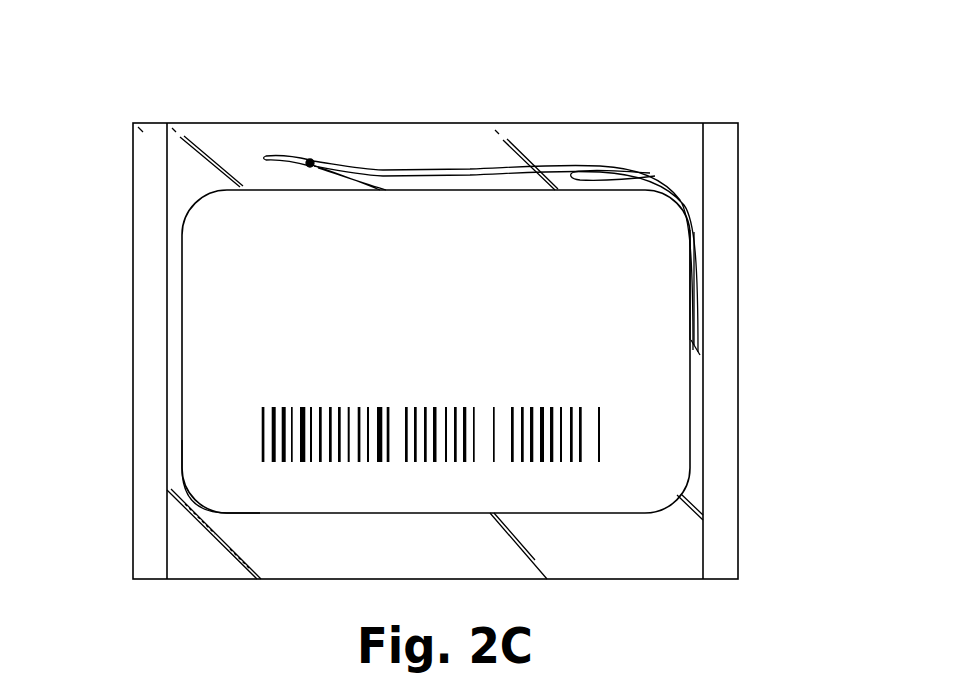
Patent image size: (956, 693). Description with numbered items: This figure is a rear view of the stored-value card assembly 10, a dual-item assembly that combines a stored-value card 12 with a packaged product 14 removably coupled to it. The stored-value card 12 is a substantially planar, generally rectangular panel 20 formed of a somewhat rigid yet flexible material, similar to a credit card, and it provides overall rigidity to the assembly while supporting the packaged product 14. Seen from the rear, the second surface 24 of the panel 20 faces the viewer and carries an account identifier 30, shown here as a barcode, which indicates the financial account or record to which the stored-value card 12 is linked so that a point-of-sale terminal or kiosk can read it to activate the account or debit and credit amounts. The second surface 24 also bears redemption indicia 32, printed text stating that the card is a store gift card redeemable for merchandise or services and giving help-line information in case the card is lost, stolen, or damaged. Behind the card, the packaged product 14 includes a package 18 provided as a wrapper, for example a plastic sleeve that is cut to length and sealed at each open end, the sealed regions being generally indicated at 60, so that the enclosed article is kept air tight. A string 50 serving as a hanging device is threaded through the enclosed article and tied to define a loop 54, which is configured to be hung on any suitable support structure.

The stored-value card assembly 10 is at (757, 107).
The stored-value card 12 is at (213, 300).
The packaged product 14 is at (137, 203).
The package 18 is at (218, 152).
The panel 20 is at (220, 383).
The second surface 24 is at (670, 368).
The account identifier 30 is at (607, 434).
The redemption indicia 32 is at (653, 273).
The string 50 is at (383, 173).
The loop 54 is at (600, 168).
The sealed ends 60 is at (150, 342).